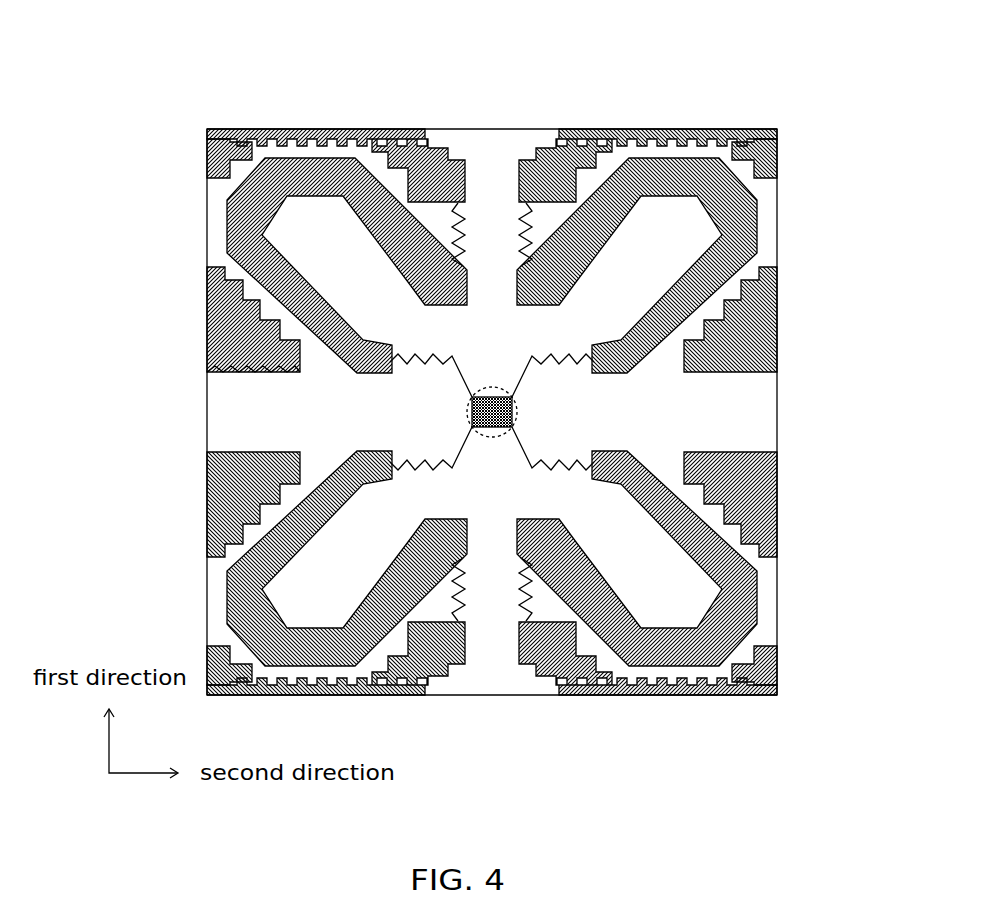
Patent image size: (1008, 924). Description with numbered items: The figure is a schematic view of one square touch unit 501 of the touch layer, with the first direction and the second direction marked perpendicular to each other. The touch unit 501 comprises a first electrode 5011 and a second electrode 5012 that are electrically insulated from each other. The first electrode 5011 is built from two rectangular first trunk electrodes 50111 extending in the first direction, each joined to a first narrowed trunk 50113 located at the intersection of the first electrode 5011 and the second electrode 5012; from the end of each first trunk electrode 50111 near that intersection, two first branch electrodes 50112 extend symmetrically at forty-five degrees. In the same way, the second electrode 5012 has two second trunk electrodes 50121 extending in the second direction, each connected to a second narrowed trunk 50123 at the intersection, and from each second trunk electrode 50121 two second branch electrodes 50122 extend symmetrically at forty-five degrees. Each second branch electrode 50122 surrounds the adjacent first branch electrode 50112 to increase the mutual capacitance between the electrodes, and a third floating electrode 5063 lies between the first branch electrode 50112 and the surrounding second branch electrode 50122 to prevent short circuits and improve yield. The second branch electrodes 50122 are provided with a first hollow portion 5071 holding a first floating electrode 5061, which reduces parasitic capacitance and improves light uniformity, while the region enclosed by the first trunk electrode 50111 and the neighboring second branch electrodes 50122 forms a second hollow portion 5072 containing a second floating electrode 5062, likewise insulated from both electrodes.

The touch unit 501 is at (522, 36).
The first electrode 5011 is at (490, 673).
The second electrode 5012 is at (223, 420).
The first trunk electrode 50111 is at (474, 207).
The first branch electrode 50112 is at (668, 610).
The first narrowed trunk 50113 is at (505, 375).
The second trunk electrode 50121 is at (712, 438).
The second branch electrode 50122 is at (760, 597).
The second narrowed trunk 50123 is at (458, 385).
The first floating electrode 5061 is at (208, 335).
The second floating electrode 5062 is at (226, 146).
The third floating electrode 5063 is at (238, 212).
The first hollow portion 5071 is at (215, 360).
The second hollow portion 5072 is at (207, 158).